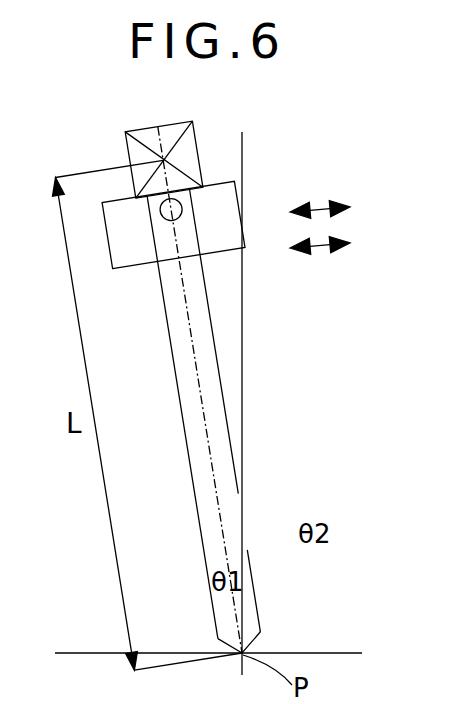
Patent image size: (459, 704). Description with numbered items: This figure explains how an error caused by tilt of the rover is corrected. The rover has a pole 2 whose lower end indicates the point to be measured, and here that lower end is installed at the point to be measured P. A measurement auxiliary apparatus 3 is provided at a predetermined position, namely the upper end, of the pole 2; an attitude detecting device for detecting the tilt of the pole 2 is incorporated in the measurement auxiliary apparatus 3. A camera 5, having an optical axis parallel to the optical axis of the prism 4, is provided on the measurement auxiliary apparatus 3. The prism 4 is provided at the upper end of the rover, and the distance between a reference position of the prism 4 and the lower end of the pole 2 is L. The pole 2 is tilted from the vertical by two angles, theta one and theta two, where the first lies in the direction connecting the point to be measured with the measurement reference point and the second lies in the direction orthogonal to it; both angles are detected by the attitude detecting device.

The pole 2 is at (222, 387).
The measurement auxiliary apparatus 3 is at (240, 190).
The prism 4 is at (203, 125).
The camera 5 is at (183, 203).